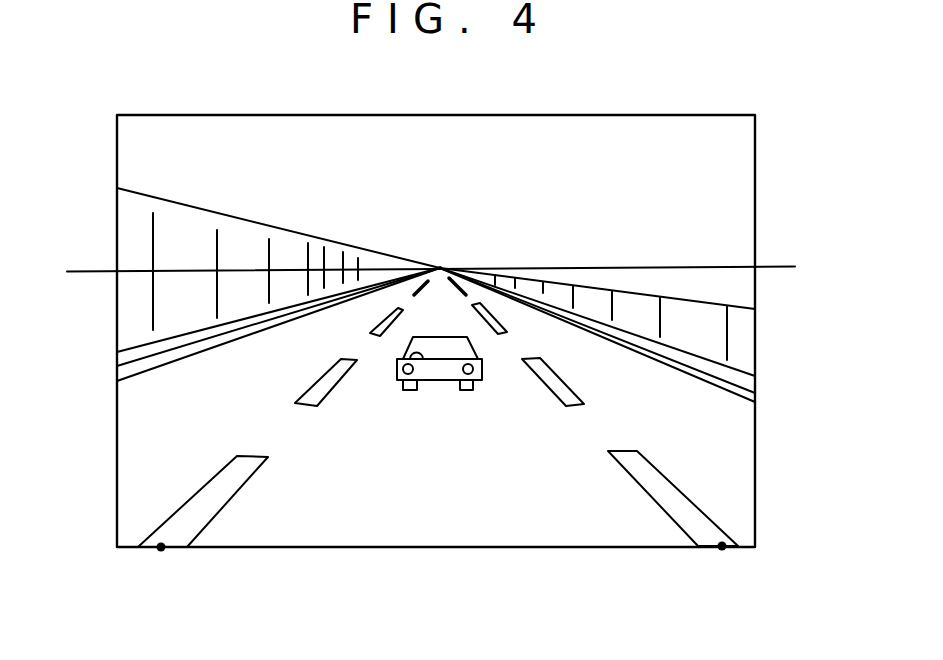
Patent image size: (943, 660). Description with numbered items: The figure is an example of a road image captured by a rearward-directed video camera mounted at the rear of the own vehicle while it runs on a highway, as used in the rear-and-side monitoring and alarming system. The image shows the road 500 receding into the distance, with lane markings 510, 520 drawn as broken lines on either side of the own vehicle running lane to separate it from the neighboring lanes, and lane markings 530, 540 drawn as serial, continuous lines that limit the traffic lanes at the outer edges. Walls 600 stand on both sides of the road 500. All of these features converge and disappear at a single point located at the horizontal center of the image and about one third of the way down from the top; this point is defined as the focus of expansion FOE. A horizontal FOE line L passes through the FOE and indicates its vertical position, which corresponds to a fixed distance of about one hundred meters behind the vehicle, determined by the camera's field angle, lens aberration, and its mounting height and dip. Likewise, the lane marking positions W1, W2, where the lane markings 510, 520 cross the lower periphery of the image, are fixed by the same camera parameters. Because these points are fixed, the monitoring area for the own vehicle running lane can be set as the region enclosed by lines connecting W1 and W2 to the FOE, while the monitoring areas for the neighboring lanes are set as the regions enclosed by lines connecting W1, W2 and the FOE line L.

The road 500 is at (463, 532).
The lane marking 510 is at (195, 518).
The lane marking 520 is at (678, 507).
The lane marking 530 is at (115, 378).
The lane marking 540 is at (745, 395).
The wall 600 is at (135, 243).
The focus of expansion FOE is at (440, 268).
The FOE line L is at (440, 268).
The lane marking position W1 is at (159, 550).
The lane marking position W2 is at (725, 549).